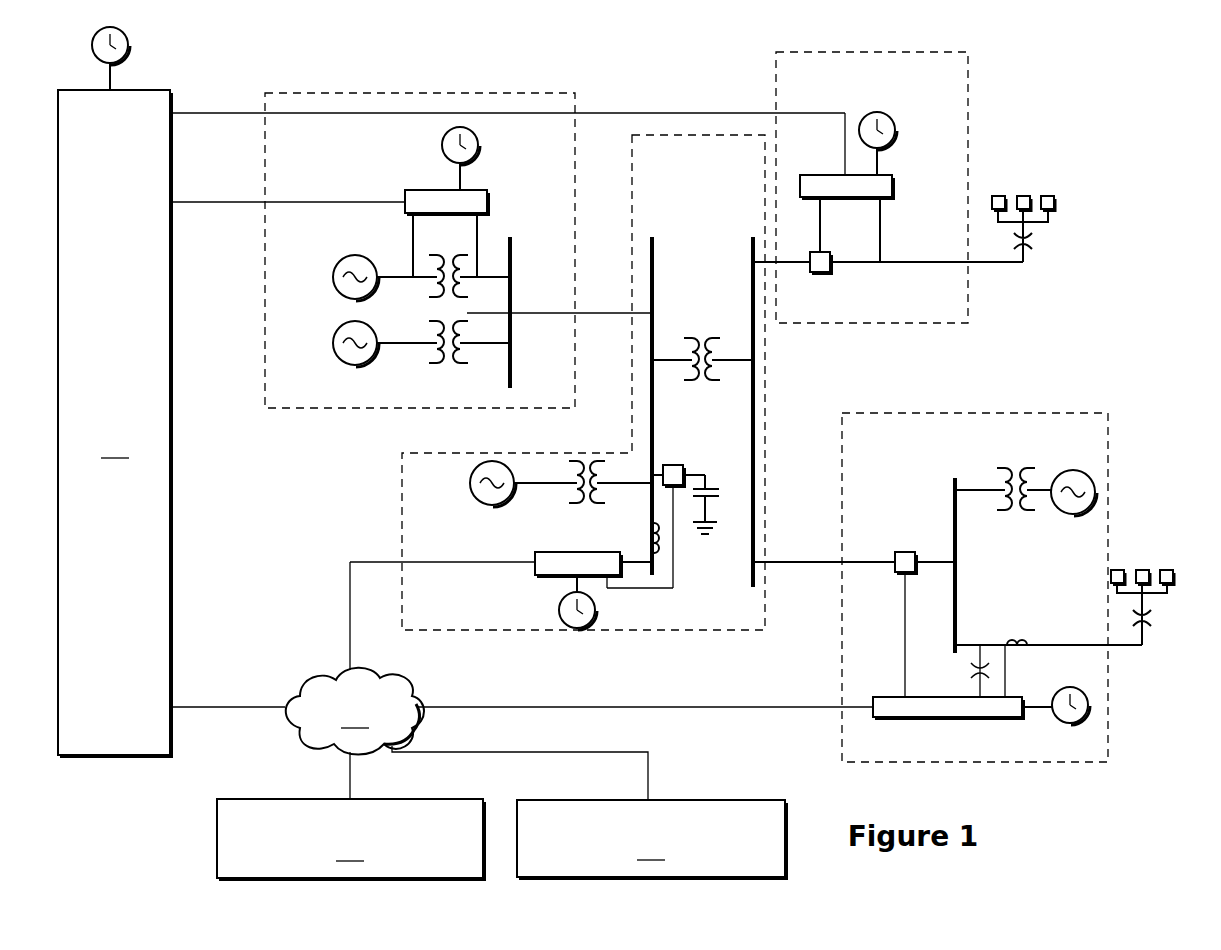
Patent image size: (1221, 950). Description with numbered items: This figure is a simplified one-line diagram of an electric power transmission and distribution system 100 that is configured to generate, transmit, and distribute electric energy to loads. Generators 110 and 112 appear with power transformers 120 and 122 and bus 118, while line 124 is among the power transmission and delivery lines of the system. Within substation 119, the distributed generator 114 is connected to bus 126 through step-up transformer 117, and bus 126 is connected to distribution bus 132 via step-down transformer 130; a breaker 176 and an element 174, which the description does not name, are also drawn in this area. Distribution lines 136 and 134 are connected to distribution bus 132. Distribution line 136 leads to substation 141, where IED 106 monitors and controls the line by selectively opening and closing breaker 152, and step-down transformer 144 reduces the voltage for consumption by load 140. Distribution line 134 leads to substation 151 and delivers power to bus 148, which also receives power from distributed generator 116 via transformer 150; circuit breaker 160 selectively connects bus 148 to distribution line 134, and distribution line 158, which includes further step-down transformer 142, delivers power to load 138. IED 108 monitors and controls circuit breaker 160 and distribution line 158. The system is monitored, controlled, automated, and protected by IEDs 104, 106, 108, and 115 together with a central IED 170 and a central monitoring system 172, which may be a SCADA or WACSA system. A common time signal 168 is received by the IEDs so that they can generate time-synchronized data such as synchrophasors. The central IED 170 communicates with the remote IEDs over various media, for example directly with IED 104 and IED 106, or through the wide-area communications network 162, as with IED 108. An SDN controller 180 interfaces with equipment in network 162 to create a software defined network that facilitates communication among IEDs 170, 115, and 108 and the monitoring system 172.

The electric power transmission and distribution system 100 is at (1087, 113).
The IED 104 is at (426, 190).
The IED 106 is at (815, 175).
The IED 108 is at (994, 718).
The generator 110 is at (331, 271).
The generator 112 is at (331, 338).
The generator 114 is at (470, 479).
The IED 115 is at (604, 554).
The distributed generator 116 is at (1061, 514).
The step-up transformer 117 is at (569, 494).
The bus 118 is at (514, 368).
The substation 119 is at (522, 630).
The transformer 120 is at (424, 290).
The transformer 122 is at (446, 364).
The line 124 is at (598, 316).
The bus 126 is at (654, 386).
The step-down transformer 130 is at (706, 340).
The distribution bus 132 is at (750, 544).
The distribution line 134 is at (852, 562).
The distribution line 136 is at (790, 264).
The load 138 is at (1144, 568).
The load 140 is at (1057, 198).
The substation 141 is at (947, 324).
The step-down transformer 142 is at (1152, 625).
The step-down transformer 144 is at (1034, 238).
The bus 148 is at (952, 478).
The transformer 150 is at (1016, 474).
The substation 151 is at (1045, 762).
The breaker 152 is at (834, 272).
The distribution line 158 is at (1045, 640).
The circuit breaker 160 is at (901, 552).
The communications network 162 is at (355, 711).
The common time signal 168 is at (128, 44).
The central IED 170 is at (115, 423).
The central monitoring system 172 is at (351, 839).
The capacitor bank 174 is at (717, 490).
The breaker 176 is at (678, 465).
The SDN controller 180 is at (652, 839).